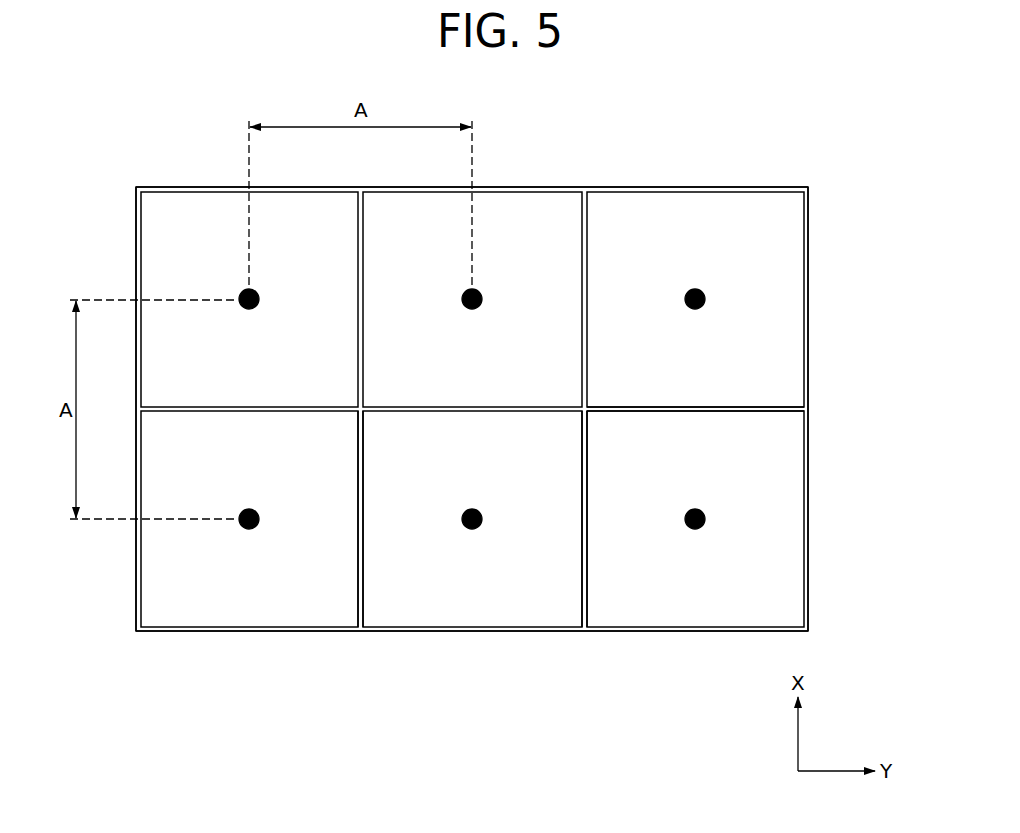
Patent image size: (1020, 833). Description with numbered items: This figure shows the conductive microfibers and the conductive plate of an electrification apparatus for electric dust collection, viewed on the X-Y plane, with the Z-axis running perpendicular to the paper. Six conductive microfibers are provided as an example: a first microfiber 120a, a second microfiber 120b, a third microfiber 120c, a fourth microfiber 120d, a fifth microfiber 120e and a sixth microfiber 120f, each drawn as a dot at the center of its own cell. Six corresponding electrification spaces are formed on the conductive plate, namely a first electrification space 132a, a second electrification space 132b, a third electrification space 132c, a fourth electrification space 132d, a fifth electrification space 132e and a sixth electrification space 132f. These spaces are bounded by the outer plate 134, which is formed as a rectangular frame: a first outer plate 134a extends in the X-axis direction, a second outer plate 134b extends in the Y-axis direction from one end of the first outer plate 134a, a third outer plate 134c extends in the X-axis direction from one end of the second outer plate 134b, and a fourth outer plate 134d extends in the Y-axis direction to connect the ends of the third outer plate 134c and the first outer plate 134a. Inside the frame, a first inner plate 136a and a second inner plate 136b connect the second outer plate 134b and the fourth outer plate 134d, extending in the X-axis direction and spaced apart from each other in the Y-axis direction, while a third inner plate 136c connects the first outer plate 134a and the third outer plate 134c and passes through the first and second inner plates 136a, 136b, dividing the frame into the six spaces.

The first microfiber 120a is at (259, 296).
The second microfiber 120b is at (482, 296).
The third microfiber 120c is at (705, 296).
The fourth microfiber 120d is at (259, 516).
The fifth microfiber 120e is at (482, 516).
The sixth microfiber 120f is at (705, 516).
The first electrification space 132a is at (198, 238).
The second electrification space 132b is at (538, 238).
The third electrification space 132c is at (699, 238).
The fourth electrification space 132d is at (253, 580).
The fifth electrification space 132e is at (476, 580).
The sixth electrification space 132f is at (700, 580).
The outer plate 134 is at (817, 231).
The first outer plate 134a is at (136, 572).
The second outer plate 134b is at (618, 186).
The third outer plate 134c is at (809, 283).
The fourth outer plate 134d is at (546, 632).
The first inner plate 136a is at (358, 587).
The second inner plate 136b is at (586, 585).
The third inner plate 136c is at (772, 407).